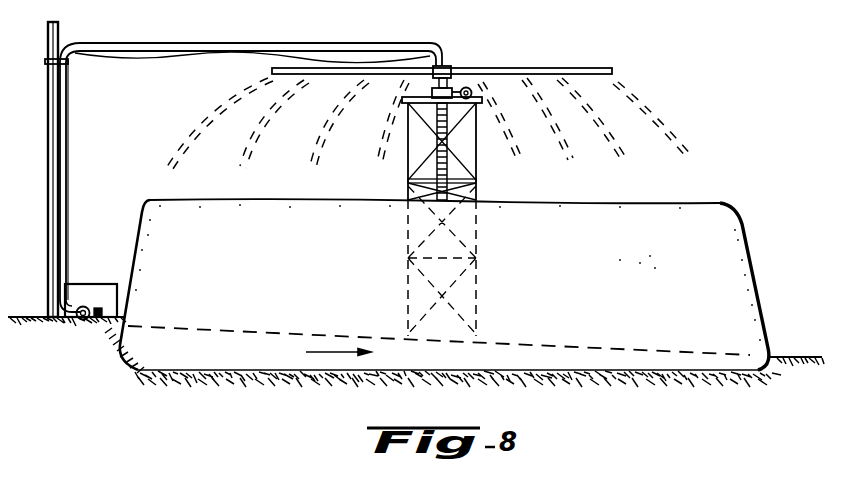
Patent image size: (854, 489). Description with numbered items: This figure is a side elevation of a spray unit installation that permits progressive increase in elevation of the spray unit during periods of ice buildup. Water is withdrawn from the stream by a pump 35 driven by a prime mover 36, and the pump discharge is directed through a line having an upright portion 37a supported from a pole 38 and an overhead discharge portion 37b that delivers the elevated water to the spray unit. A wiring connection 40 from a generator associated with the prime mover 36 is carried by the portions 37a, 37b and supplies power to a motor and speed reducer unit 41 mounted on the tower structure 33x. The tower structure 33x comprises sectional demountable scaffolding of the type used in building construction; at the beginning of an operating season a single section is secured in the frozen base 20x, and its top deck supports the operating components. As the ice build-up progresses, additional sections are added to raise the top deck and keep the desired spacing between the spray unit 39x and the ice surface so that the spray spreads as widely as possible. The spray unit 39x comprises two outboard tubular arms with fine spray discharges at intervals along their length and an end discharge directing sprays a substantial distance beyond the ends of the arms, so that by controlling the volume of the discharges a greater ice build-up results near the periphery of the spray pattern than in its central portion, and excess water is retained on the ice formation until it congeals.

The frozen base 20x is at (231, 324).
The tower structure 33x is at (478, 192).
The pump 35 is at (79, 322).
The prime mover 36 is at (91, 292).
The upright portion 37a is at (61, 193).
The overhead discharge portion 37b is at (197, 46).
The pole 38 is at (66, 152).
The spray unit 39x is at (568, 68).
The wiring connection 40 is at (186, 56).
The motor and speed reducer unit 41 is at (472, 94).